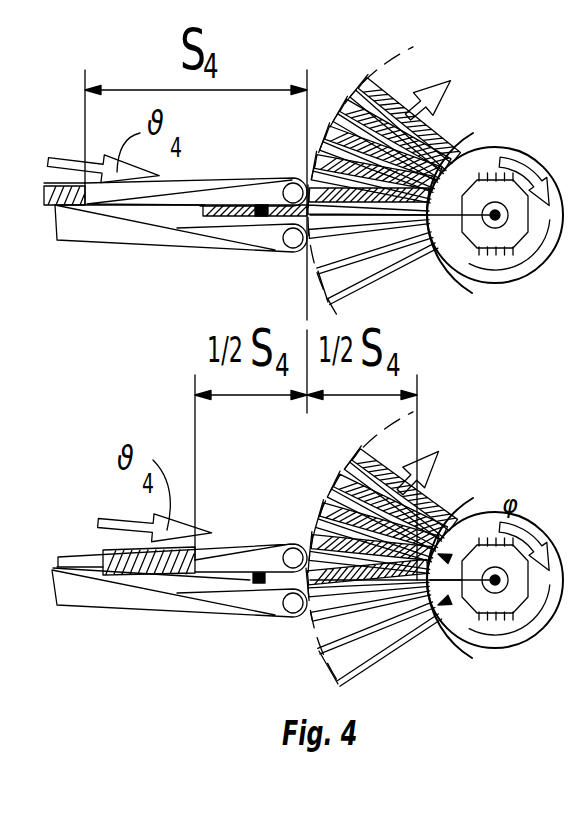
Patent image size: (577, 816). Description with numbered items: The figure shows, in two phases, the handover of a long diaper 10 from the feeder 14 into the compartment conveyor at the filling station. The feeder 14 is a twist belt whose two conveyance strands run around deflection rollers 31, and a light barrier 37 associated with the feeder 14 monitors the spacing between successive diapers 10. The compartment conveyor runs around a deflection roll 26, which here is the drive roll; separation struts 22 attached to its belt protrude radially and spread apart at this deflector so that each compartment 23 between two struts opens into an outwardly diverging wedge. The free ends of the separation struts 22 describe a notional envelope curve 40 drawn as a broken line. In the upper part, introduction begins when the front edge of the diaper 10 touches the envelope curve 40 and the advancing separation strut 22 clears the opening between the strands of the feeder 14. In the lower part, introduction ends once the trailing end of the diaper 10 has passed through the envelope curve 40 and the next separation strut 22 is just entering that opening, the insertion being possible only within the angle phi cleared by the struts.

The diaper 10 is at (43, 204).
The feeder 14 is at (212, 149).
The separation strut 22 is at (380, 281).
The compartment 23 is at (333, 284).
The deflection roll 26 is at (528, 243).
The deflection roller 31 is at (291, 183).
The light barrier 37 is at (257, 206).
The envelope curve 40 is at (397, 53).